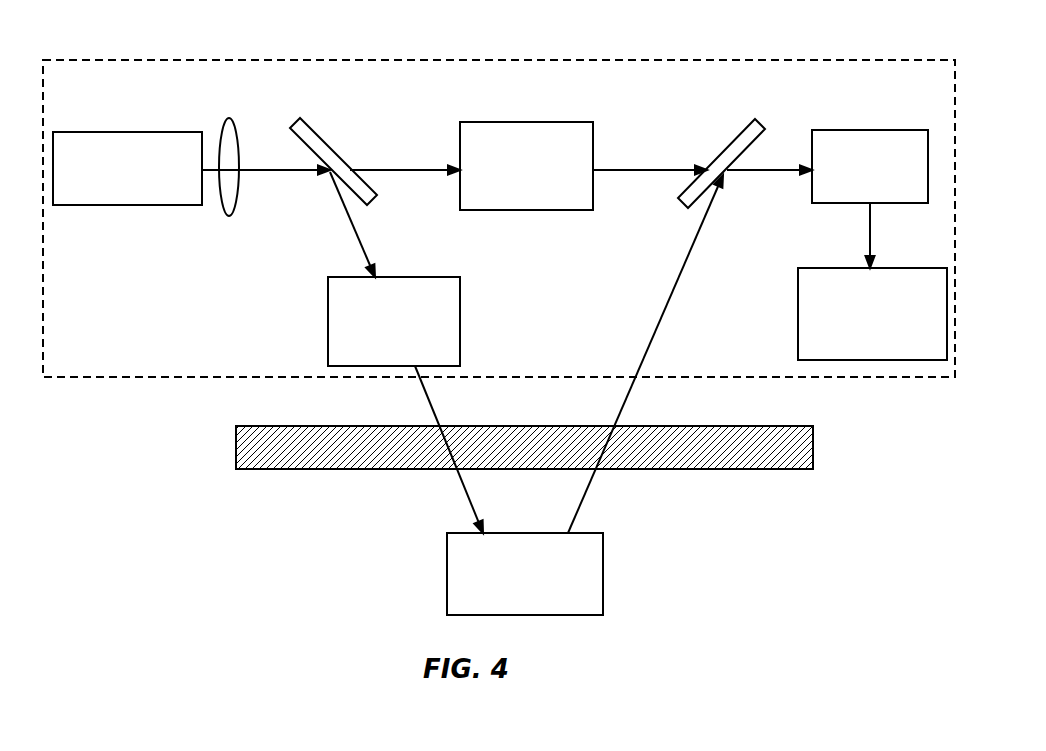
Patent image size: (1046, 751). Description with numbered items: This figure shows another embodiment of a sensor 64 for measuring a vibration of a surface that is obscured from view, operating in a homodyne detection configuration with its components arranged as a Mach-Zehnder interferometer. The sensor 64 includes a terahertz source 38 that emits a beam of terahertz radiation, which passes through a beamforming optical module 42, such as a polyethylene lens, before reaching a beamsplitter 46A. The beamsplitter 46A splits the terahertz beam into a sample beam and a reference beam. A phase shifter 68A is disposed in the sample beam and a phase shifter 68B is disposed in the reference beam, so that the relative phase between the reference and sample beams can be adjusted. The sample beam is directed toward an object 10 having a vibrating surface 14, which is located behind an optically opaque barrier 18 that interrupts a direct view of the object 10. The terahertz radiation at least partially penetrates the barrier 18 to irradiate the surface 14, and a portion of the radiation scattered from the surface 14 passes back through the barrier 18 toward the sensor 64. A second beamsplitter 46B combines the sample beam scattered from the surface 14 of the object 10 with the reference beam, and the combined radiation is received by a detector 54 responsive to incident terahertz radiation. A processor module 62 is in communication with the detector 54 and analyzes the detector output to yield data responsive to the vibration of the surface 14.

The sensor 64 is at (230, 60).
The terahertz source 38 is at (127, 168).
The beamforming optical module 42 is at (228, 214).
The beamsplitter 46A is at (358, 203).
The phase shifter 68B is at (526, 166).
The phase shifter 68A is at (394, 321).
The beamsplitter 46B is at (680, 200).
The detector 54 is at (870, 166).
The processor module 62 is at (872, 314).
The barrier 18 is at (813, 452).
The vibrating surface 14 is at (587, 533).
The object 10 is at (525, 574).